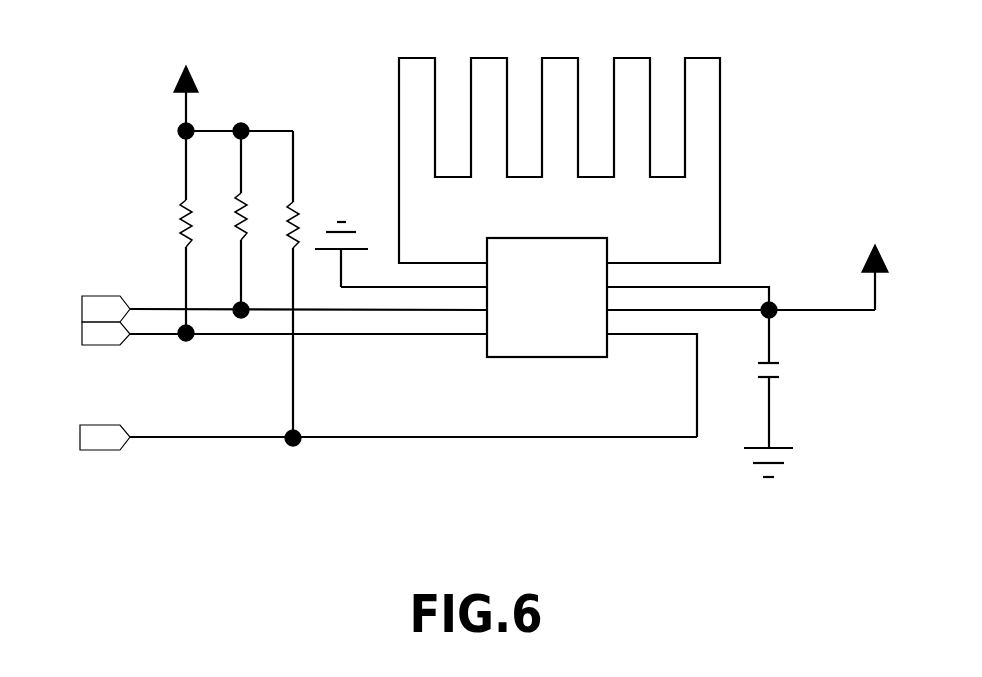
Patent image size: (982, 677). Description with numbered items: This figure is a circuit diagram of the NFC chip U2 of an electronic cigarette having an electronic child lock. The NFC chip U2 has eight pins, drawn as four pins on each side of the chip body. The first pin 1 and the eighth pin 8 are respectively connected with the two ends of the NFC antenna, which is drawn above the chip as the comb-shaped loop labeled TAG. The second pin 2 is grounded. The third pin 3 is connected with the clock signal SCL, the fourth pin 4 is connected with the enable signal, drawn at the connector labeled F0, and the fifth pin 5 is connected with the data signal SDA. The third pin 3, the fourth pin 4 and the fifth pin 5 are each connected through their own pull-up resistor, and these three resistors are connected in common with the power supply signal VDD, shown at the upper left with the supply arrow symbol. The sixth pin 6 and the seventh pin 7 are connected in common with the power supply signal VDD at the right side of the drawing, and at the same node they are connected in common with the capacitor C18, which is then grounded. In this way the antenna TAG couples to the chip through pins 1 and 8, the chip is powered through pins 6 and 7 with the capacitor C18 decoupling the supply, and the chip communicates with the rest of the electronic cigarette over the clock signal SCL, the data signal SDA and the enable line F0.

The NFC chip U2 is at (543, 297).
The capacitor C18 is at (784, 393).
The tag antenna TAG is at (559, 139).
The power supply signal VDD is at (534, 174).
The clock signal SCL is at (254, 309).
The field detect output F0 is at (258, 335).
The data signal SDA is at (363, 437).
The first pin 1 is at (466, 251).
The second pin 2 is at (466, 275).
The third pin 3 is at (466, 299).
The fourth pin 4 is at (466, 322).
The fifth pin 5 is at (619, 322).
The sixth pin 6 is at (619, 299).
The seventh pin 7 is at (619, 275).
The eighth pin 8 is at (619, 251).